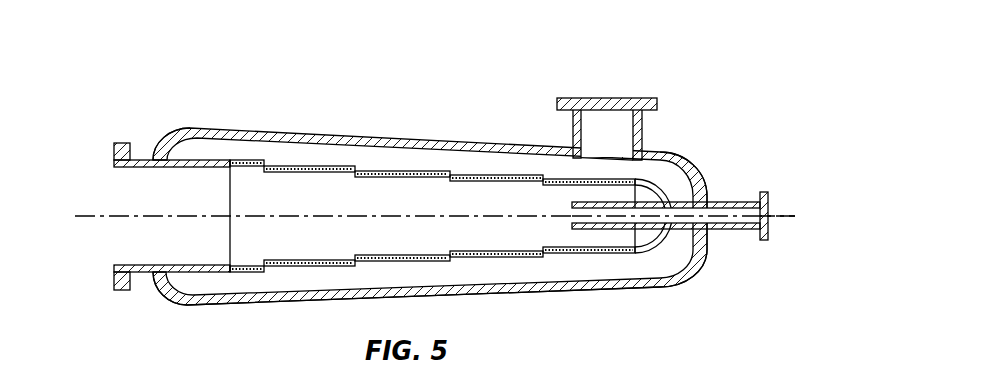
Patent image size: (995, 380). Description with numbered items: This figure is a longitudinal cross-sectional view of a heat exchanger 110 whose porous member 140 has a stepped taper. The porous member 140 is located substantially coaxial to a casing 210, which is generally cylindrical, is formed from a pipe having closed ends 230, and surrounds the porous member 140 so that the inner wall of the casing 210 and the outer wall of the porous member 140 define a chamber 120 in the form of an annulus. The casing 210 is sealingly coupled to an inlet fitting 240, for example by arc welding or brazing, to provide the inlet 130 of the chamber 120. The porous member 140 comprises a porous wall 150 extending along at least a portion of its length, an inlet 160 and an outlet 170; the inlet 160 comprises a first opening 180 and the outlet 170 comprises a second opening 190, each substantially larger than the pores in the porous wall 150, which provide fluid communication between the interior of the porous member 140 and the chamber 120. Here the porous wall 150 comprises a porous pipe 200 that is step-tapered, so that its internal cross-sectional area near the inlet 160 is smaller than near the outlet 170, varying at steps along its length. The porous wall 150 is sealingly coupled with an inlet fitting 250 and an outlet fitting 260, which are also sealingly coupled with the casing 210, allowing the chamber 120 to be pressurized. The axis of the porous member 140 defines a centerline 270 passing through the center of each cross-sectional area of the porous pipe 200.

The heat exchanger 110 is at (127, 97).
The chamber 120 is at (448, 163).
The inlet 130 is at (607, 118).
The porous member 140 is at (228, 151).
The porous wall 150 is at (437, 262).
The inlet 160 is at (768, 208).
The outlet 170 is at (122, 232).
The first opening 180 is at (577, 250).
The second opening 190 is at (232, 236).
The porous metal pipe 200 is at (348, 156).
The casing 210 is at (337, 292).
The closed ends 230 is at (172, 297).
The inlet fitting 240 is at (562, 84).
The inlet fitting 250 is at (738, 258).
The outlet fitting 260 is at (90, 160).
The centerline 270 is at (296, 217).